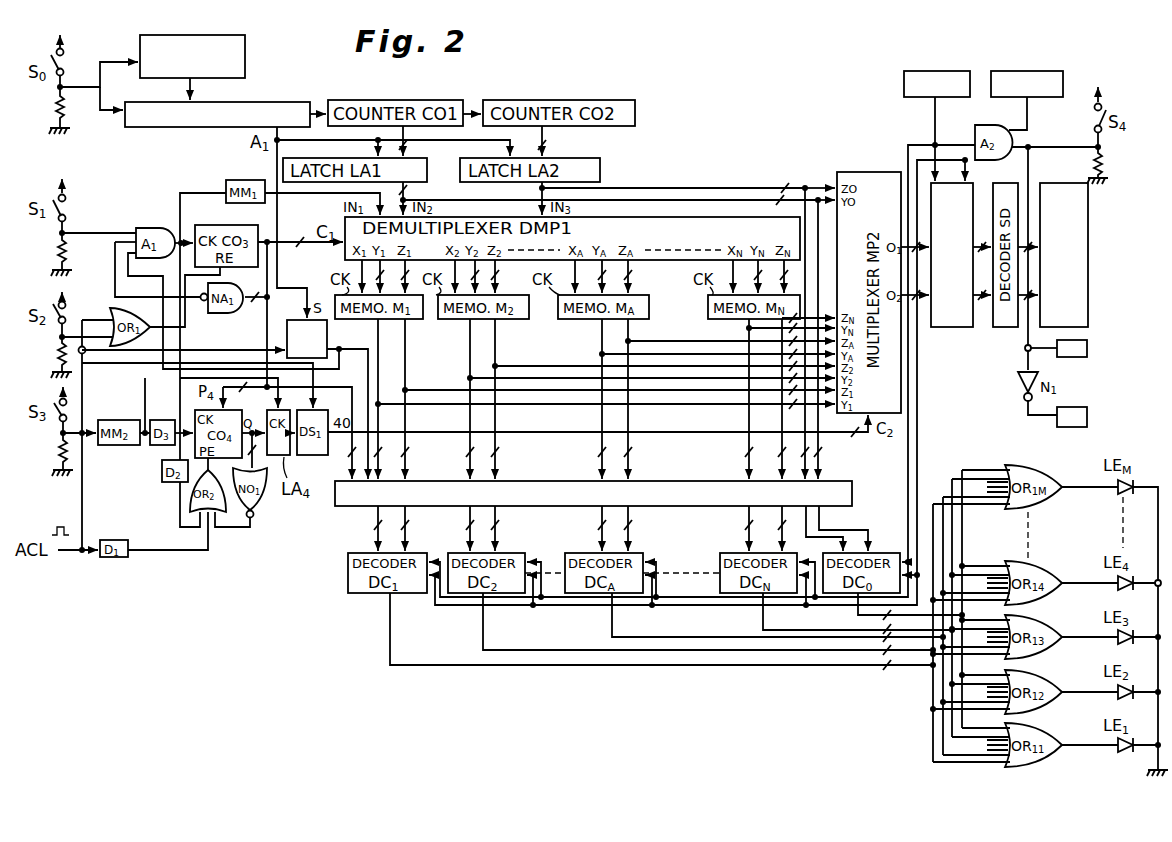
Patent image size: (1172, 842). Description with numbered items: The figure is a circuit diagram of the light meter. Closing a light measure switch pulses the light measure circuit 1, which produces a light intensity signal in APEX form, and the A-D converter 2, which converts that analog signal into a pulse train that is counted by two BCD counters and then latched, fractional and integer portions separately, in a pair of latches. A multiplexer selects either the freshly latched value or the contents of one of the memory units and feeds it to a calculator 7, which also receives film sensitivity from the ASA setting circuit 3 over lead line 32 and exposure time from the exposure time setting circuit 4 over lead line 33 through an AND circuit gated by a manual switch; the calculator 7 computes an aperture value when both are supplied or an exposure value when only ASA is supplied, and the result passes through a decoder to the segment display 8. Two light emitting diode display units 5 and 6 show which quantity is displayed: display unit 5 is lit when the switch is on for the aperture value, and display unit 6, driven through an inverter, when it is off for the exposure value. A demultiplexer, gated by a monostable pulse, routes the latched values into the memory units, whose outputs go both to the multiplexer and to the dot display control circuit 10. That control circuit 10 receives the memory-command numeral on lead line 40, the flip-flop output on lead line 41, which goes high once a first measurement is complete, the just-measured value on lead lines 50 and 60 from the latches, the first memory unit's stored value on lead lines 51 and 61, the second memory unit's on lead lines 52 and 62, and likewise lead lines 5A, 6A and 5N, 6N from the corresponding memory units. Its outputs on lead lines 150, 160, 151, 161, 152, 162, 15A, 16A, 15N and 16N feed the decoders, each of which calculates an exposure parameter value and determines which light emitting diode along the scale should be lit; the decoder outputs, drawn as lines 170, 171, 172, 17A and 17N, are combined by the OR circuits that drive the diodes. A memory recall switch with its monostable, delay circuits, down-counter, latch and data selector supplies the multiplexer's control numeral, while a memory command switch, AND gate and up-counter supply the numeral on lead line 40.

The light measure circuit 1 is at (245, 41).
The A-D converter 2 is at (217, 114).
The ASA setting circuit 3 is at (967, 73).
The exposure time setting circuit 4 is at (1060, 73).
The display unit 5 is at (1087, 346).
The display unit 6 is at (1087, 412).
The calculator 7 is at (961, 255).
The segment display 8 is at (1064, 255).
The dot display control circuit 10 is at (593, 493).
The lead line 32 is at (702, 360).
The lead line 33 is at (697, 367).
The lead line 40 is at (305, 399).
The lead line 41 is at (295, 430).
The lead line 50 is at (796, 427).
The lead line 51 is at (604, 399).
The lead line 52 is at (650, 399).
The lead line 5A is at (707, 399).
The lead line 5N is at (778, 399).
The lead line 60 is at (832, 427).
The lead line 61 is at (618, 399).
The lead line 62 is at (663, 399).
The lead line 6A is at (729, 399).
The lead line 6N is at (793, 396).
The lead line 150 is at (852, 492).
The lead line 151 is at (374, 527).
The decoder input line 152 is at (468, 530).
The lead line 15A is at (600, 527).
The lead line 15N is at (779, 526).
The lead line 160 is at (845, 532).
The lead line 161 is at (420, 528).
The decoder input line 162 is at (512, 528).
The lead line 16A is at (645, 526).
The lead line 16N is at (746, 520).
The decoder output line 170 is at (878, 605).
The decoder output line 171 is at (663, 631).
The decoder output line 172 is at (709, 624).
The decoder output line 17A is at (779, 617).
The decoder output line 17N is at (859, 613).